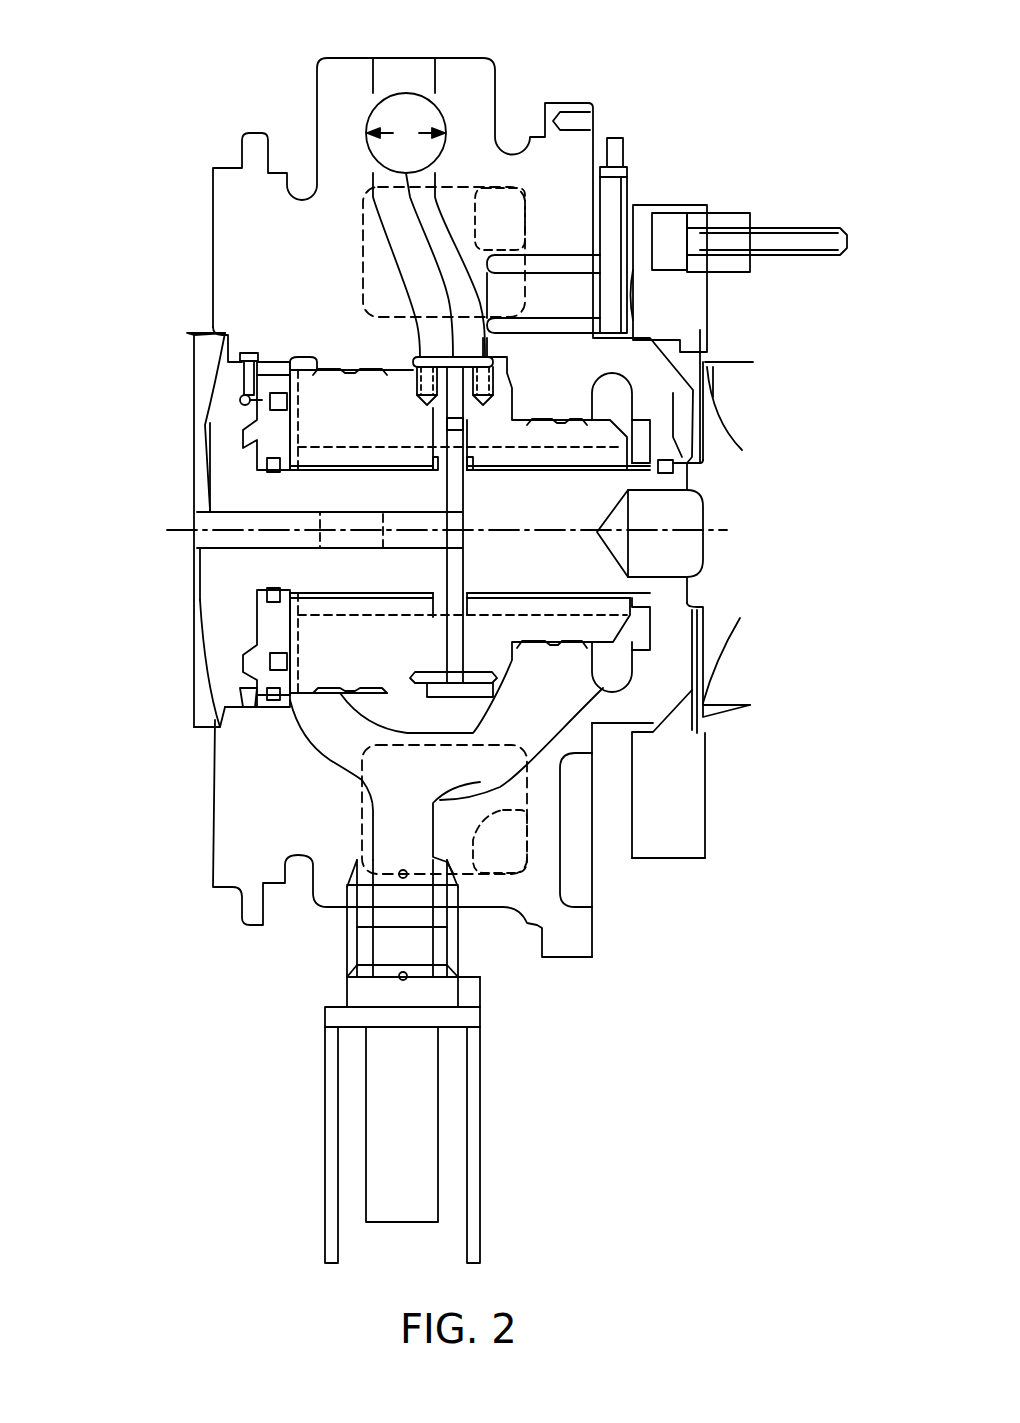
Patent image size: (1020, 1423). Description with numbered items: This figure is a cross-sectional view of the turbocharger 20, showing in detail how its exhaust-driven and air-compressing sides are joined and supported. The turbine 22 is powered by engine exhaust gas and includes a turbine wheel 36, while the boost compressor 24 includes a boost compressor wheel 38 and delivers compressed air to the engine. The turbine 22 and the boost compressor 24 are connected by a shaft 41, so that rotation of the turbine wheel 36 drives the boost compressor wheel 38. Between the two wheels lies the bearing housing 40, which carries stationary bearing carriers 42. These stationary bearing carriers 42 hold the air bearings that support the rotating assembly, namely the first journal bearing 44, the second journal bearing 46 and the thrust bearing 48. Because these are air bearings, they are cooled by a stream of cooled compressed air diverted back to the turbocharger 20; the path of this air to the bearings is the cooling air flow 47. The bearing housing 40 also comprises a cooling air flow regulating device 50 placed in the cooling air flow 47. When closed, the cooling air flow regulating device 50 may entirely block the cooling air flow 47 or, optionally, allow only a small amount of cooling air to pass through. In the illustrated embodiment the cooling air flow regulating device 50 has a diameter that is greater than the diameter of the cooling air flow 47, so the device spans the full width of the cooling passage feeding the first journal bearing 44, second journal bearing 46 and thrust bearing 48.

The turbocharger 20 is at (723, 143).
The turbine 22 is at (755, 628).
The boost compressor 24 is at (160, 552).
The turbine wheel 36 is at (743, 503).
The boost compressor wheel 38 is at (190, 447).
The bearing housing 40 is at (217, 810).
The shaft 41 is at (343, 530).
The stationary bearing carriers 42 is at (360, 380).
The first journal bearing 44 is at (518, 453).
The second journal bearing 46 is at (393, 468).
The cooling air flow 47 is at (457, 255).
The thrust bearing 48 is at (440, 632).
The cooling air flow regulating device 50 is at (403, 92).